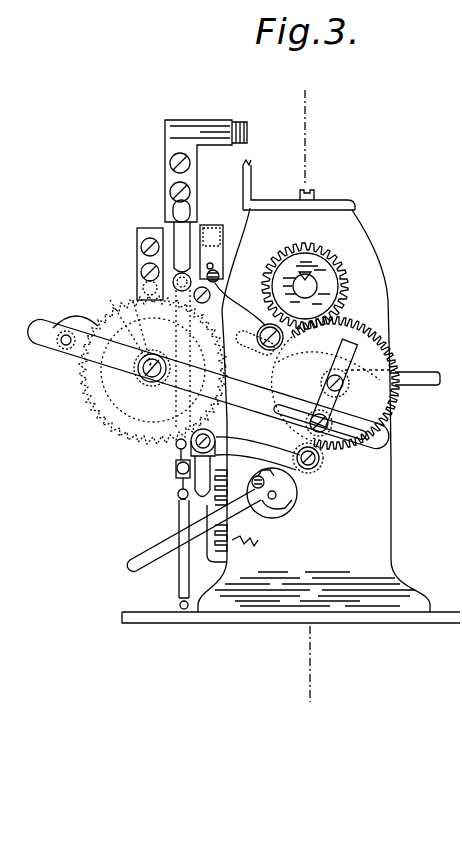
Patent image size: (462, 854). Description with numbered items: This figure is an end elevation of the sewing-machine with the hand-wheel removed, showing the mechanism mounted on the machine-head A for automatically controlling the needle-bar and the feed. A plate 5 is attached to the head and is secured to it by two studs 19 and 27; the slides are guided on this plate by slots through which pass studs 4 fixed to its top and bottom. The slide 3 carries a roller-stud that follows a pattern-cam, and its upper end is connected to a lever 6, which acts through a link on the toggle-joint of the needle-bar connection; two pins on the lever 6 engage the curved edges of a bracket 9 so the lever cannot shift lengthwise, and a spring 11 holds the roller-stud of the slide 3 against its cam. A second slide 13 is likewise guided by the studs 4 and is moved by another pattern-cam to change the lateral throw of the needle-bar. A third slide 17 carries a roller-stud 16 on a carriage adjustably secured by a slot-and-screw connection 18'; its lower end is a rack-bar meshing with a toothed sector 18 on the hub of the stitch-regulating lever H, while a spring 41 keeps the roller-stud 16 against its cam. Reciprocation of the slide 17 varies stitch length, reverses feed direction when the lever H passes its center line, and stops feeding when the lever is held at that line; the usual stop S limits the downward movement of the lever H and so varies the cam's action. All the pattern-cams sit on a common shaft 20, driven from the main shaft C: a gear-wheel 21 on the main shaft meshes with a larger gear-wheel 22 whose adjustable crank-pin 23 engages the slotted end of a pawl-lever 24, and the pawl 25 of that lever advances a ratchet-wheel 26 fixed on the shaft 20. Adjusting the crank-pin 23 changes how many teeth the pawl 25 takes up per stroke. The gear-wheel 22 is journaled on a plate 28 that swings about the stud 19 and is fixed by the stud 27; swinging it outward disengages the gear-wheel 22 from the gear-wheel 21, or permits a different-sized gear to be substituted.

The slide 3 is at (190, 214).
The studs 4 is at (217, 440).
The plate 5 is at (273, 445).
The lever 6 is at (237, 121).
The bracket 9 is at (328, 207).
The spring 11 is at (184, 478).
The slide 13 is at (214, 262).
The roller-stud 16 is at (135, 330).
The slide 17 is at (190, 505).
The toothed sector 18 is at (249, 516).
The slot-and-screw connection 18' is at (134, 259).
The stud 19 is at (311, 469).
The shaft 20 is at (151, 387).
The gear-wheel 21 is at (345, 297).
The gear-wheel 22 is at (396, 368).
The crank-pin 23 is at (330, 436).
The pawl-lever 24 is at (55, 347).
The pawl 25 is at (84, 323).
The ratchet-wheel 26 is at (153, 370).
The stud 27 is at (266, 326).
The plate 28 is at (305, 378).
The spring 41 is at (178, 582).
The machine-head A is at (377, 484).
The main shaft C is at (305, 288).
The stitch-regulating lever H is at (190, 530).
The stop S is at (283, 505).